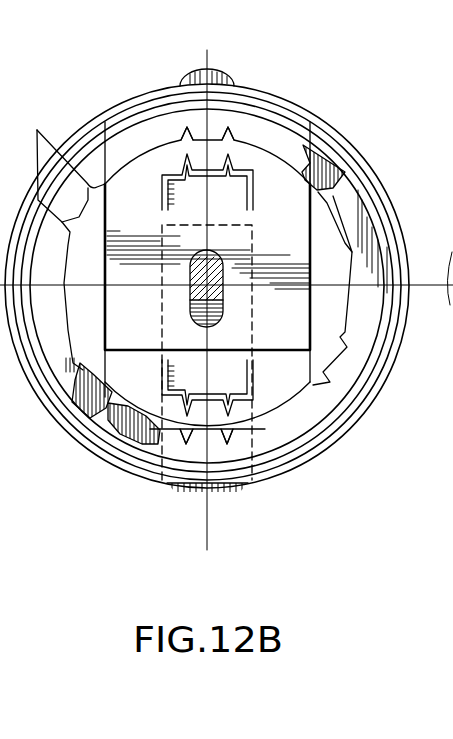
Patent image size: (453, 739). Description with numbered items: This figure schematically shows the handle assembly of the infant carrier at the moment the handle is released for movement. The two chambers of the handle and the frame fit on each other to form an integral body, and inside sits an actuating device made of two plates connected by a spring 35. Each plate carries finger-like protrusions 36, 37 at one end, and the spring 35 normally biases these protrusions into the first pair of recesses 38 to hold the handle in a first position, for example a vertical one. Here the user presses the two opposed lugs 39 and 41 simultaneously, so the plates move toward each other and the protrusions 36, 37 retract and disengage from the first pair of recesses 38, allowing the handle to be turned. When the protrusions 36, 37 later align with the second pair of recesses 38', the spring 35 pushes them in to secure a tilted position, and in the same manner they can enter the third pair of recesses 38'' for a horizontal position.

The spring 35 is at (222, 310).
The finger-like protrusions 36 is at (162, 191).
The finger-like protrusions 37 is at (253, 372).
The first pair of recesses 38 is at (251, 298).
The second pair of recesses 38' is at (223, 300).
The third pair of recesses 38'' is at (228, 261).
The lug 39 is at (220, 74).
The lug 41 is at (167, 488).